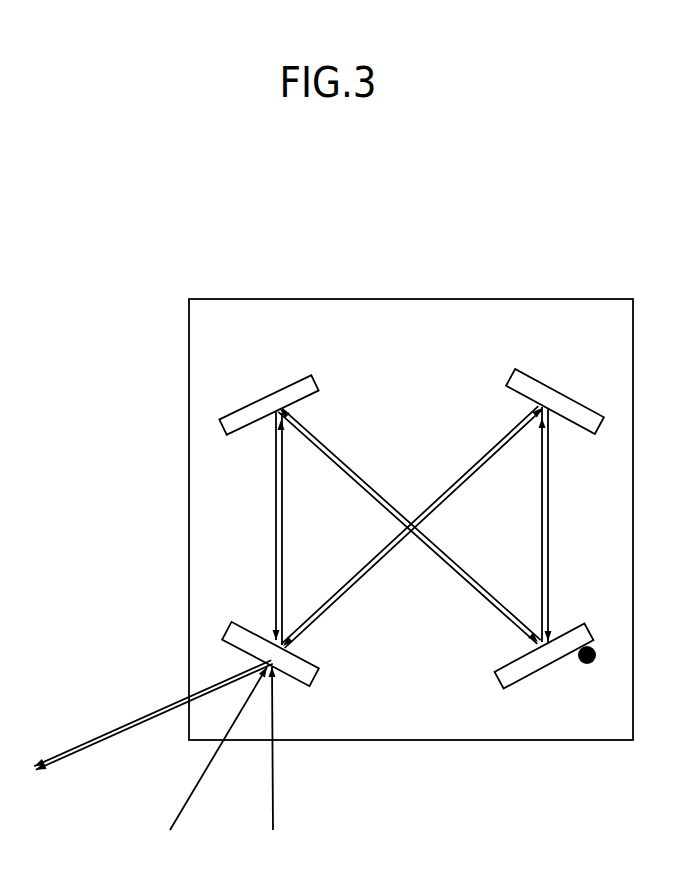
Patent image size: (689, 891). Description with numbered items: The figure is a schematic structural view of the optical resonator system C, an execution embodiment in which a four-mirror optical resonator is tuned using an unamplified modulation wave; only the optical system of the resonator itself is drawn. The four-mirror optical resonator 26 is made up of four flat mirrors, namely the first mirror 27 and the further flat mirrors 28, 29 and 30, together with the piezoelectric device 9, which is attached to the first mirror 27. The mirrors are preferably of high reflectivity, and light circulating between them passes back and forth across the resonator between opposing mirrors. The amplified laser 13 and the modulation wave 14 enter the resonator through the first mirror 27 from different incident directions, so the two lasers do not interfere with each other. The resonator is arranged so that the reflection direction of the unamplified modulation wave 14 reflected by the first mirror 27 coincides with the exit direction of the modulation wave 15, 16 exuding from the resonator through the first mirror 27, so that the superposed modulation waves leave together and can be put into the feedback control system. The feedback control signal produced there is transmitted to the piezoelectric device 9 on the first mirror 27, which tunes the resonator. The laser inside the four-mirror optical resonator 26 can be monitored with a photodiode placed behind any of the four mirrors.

The optical resonator system C is at (411, 439).
The 4-mirror optical resonator 26 is at (411, 508).
The mirror-1 27 is at (270, 634).
The flat mirror 28 is at (554, 635).
The flat mirror 29 is at (555, 389).
The flat mirror 30 is at (270, 390).
The piezoelectric device 9 is at (588, 671).
The amplified laser 13 is at (275, 767).
The modulation wave 14 is at (197, 758).
The modulation wave 15 is at (153, 712).
The modulation wave 16 is at (130, 720).